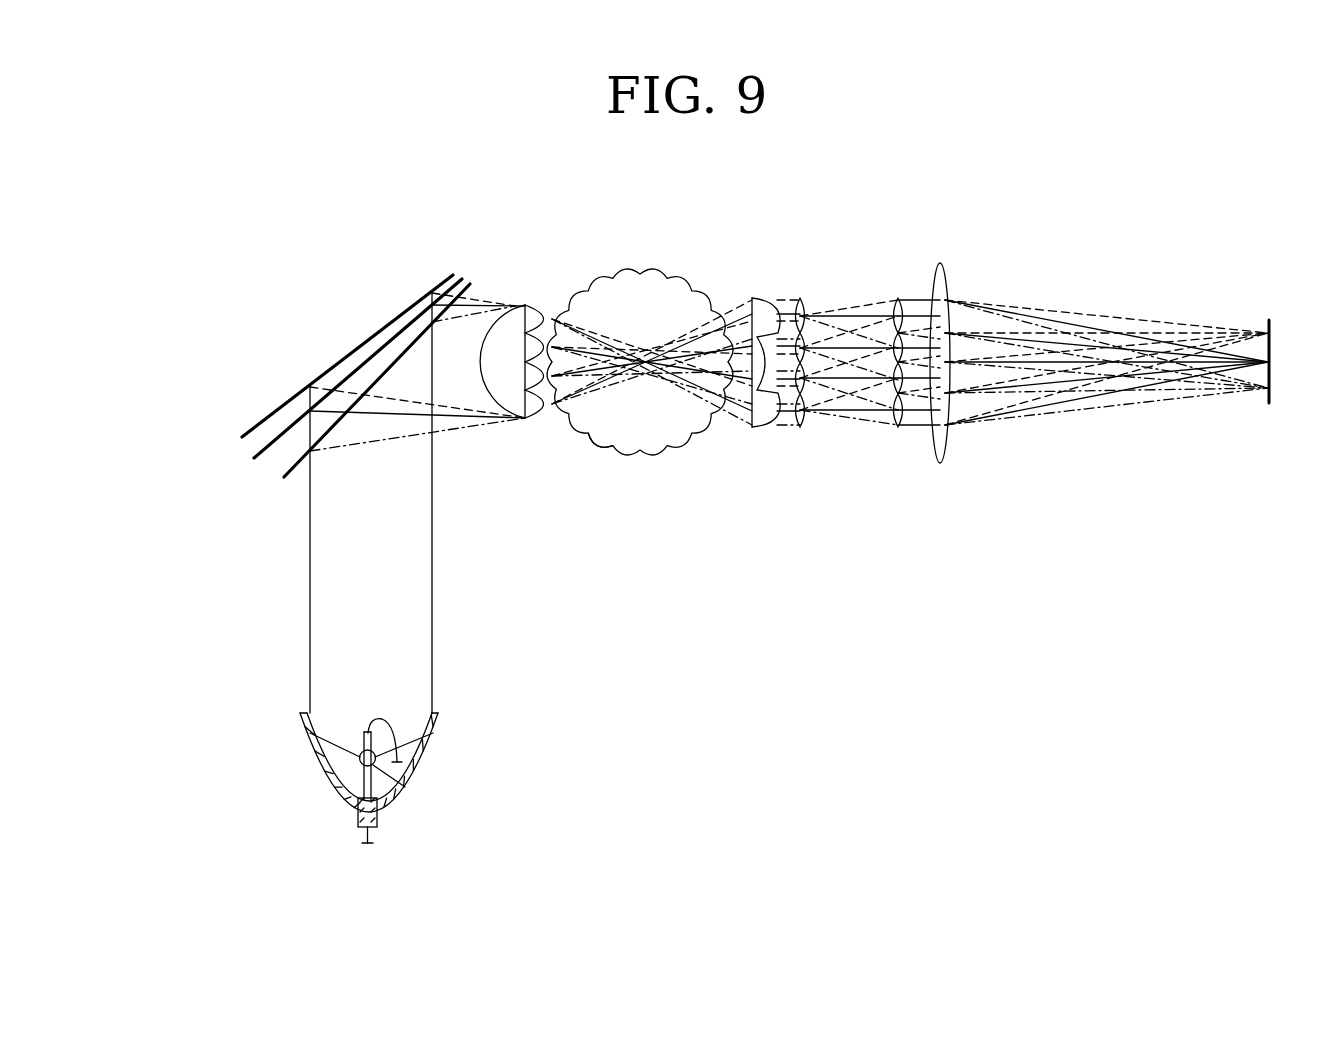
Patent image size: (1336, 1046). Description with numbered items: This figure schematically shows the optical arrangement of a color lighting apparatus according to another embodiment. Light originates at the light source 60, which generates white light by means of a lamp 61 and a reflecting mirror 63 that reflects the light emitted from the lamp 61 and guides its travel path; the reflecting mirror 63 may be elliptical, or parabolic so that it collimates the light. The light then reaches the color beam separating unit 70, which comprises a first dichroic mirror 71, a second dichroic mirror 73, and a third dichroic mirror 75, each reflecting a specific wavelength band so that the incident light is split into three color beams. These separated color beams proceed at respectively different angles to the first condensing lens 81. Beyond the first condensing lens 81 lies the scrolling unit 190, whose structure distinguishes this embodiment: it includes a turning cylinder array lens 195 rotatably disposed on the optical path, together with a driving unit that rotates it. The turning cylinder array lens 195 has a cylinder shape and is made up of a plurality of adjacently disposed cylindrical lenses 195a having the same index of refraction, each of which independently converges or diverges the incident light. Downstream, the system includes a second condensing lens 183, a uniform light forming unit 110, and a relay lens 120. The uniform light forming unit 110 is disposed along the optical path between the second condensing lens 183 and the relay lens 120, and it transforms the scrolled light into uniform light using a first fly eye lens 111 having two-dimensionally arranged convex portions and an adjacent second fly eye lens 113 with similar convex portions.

The light source 60 is at (297, 768).
The lamp 61 is at (398, 780).
The reflecting mirror 63 is at (334, 770).
The color beam separating unit 70 is at (285, 315).
The first dichroic mirror 71 is at (295, 470).
The second dichroic mirror 73 is at (267, 447).
The third dichroic mirror 75 is at (268, 412).
The first condensing lens 81 is at (515, 317).
The uniform light forming unit 110 is at (887, 207).
The first fly eye lens 111 is at (803, 300).
The second fly eye lens 113 is at (898, 298).
The relay lens 120 is at (940, 263).
The second condensing lens 183 is at (764, 305).
The scrolling unit 190 is at (701, 264).
The turning cylinder array lens 195 is at (640, 285).
The cylindrical lens 195a is at (610, 457).